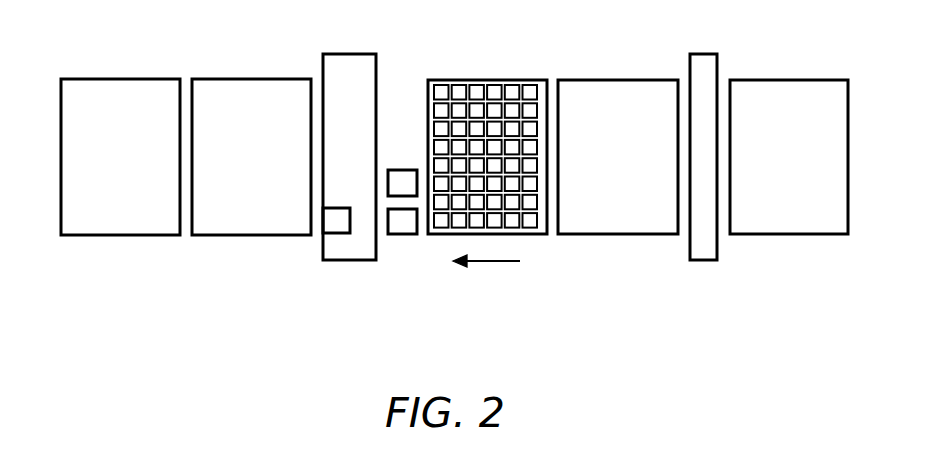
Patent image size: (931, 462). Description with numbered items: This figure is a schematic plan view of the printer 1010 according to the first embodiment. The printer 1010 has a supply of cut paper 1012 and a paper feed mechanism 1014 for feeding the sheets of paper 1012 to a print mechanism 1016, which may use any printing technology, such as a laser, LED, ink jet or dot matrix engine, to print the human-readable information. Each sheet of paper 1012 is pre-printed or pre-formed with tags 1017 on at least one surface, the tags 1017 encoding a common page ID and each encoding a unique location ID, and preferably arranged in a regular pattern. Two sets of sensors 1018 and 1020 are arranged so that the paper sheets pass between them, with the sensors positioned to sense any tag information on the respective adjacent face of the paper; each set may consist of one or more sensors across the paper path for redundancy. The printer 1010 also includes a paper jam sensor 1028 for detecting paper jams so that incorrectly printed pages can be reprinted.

The printer 1010 is at (506, 287).
The cut paper 1012 is at (120, 236).
The paper feed mechanism 1014 is at (718, 73).
The print mechanism 1016 is at (377, 73).
The tags 1017 is at (532, 222).
The sensors 1018 is at (403, 244).
The sensors 1020 is at (419, 261).
The paper jam sensor 1028 is at (337, 222).